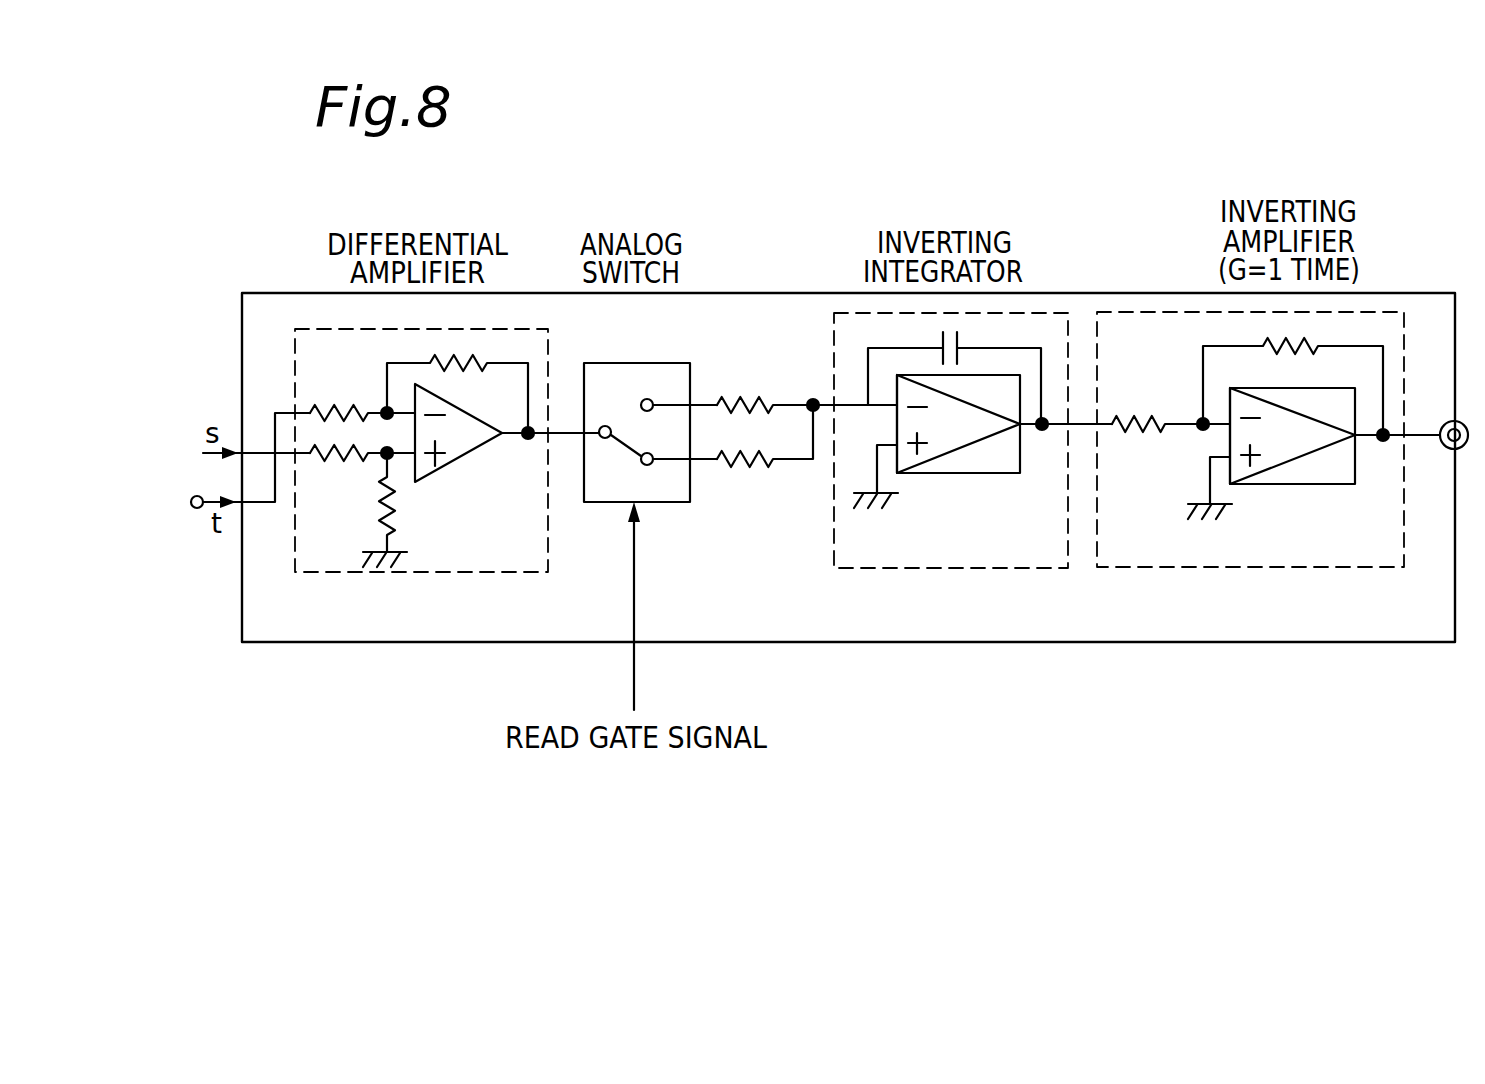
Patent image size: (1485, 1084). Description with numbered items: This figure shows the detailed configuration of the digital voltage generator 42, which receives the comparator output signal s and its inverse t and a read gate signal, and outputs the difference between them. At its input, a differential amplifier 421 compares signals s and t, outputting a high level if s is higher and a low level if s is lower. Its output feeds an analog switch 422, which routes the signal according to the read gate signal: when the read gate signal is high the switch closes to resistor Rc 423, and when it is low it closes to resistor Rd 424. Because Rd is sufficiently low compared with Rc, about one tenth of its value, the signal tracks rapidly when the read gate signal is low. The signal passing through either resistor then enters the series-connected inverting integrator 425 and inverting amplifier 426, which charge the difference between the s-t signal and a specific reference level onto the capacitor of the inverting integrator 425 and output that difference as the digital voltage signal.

The digital voltage generator 42 is at (848, 486).
The differential amplifier 421 is at (447, 469).
The analog switch 422 is at (600, 363).
The resistor Rc 423 is at (757, 405).
The resistor Rd 424 is at (765, 470).
The inverting integrator 425 is at (973, 460).
The inverting amplifier 426 is at (1282, 458).